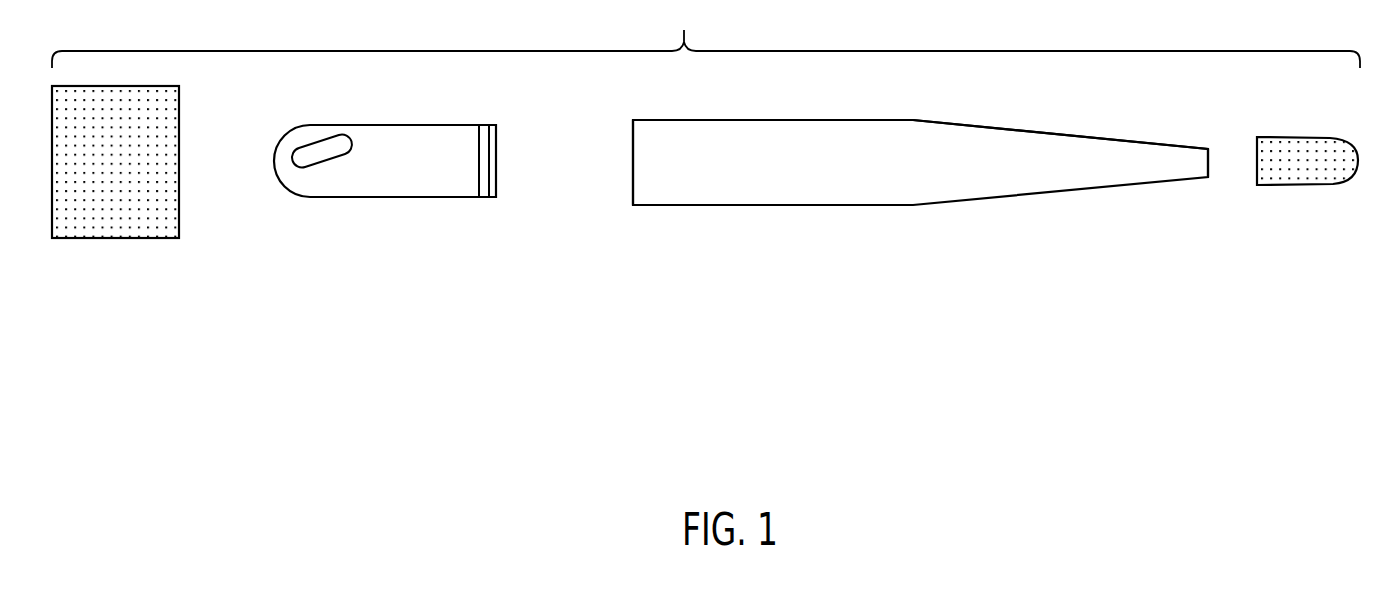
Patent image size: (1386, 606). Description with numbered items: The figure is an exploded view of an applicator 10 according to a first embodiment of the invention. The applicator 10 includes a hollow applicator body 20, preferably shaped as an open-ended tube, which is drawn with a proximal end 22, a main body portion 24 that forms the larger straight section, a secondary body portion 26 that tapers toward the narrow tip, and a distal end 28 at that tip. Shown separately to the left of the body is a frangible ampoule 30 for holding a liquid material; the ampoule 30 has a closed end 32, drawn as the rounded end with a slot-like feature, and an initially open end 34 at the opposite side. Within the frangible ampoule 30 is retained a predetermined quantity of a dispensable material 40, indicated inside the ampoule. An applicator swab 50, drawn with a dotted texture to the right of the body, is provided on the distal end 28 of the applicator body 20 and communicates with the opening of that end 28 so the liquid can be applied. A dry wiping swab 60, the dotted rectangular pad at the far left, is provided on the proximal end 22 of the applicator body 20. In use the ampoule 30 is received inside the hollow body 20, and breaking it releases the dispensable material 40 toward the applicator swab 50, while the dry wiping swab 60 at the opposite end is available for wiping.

The applicator 10 is at (706, 34).
The hollow applicator body 20 is at (988, 222).
The proximal end 22 is at (632, 140).
The main body portion 24 is at (792, 120).
The secondary body portion 26 is at (1023, 128).
The distal end 28 is at (1209, 158).
The frangible ampoule 30 is at (397, 125).
The closed end 32 is at (279, 142).
The initially open end 34 is at (497, 150).
The dispensable material 40 is at (390, 187).
The applicator swab 50 is at (1307, 180).
The dry wiping swab 60 is at (119, 218).